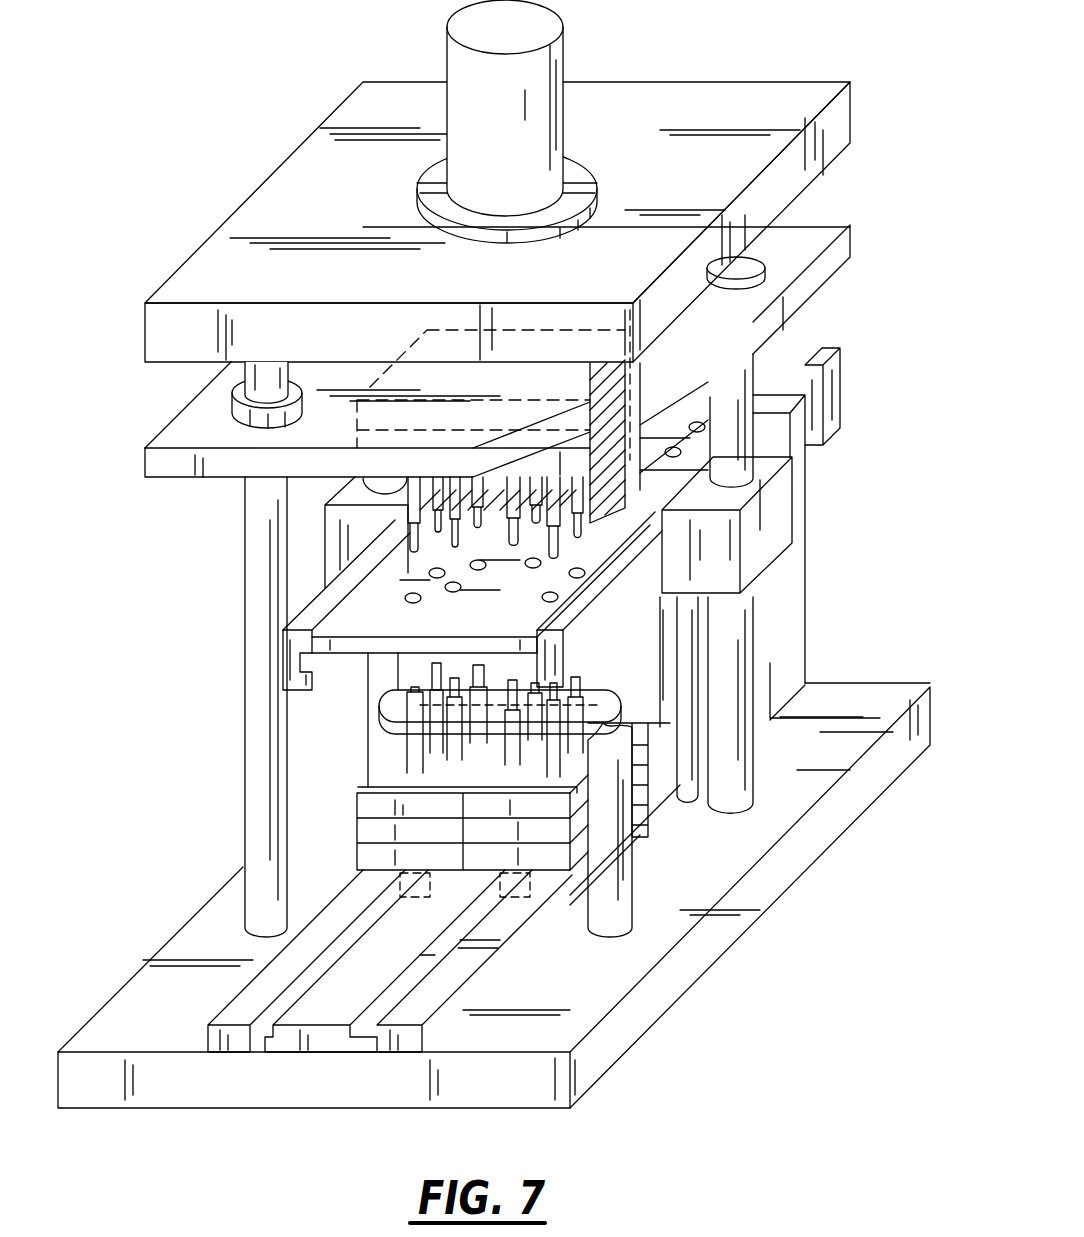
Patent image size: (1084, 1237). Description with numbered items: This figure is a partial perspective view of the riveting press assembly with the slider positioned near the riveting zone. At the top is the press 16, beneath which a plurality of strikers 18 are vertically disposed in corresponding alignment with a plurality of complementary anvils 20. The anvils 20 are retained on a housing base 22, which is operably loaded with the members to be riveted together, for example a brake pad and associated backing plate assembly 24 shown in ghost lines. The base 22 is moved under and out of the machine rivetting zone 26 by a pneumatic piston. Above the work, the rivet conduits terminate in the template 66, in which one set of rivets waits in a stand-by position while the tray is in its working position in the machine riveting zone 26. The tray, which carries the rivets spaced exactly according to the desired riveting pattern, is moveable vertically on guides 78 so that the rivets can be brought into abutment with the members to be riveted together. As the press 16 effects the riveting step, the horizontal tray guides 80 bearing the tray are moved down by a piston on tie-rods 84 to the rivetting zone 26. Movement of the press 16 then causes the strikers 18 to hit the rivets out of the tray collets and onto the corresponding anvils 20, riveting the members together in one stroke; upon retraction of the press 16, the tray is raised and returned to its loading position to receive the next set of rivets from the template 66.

The press 16 is at (545, 100).
The strikers 18 is at (407, 505).
The anvils 20 is at (368, 772).
The housing base 22 is at (365, 835).
The brake pad and associated backing plate assembly 24 is at (390, 706).
The machine rivetting zone 26 is at (619, 691).
The template 66 is at (757, 397).
The guides 78 is at (743, 620).
The horizontal tray guides 80 is at (837, 377).
The tie-rods 84 is at (690, 710).